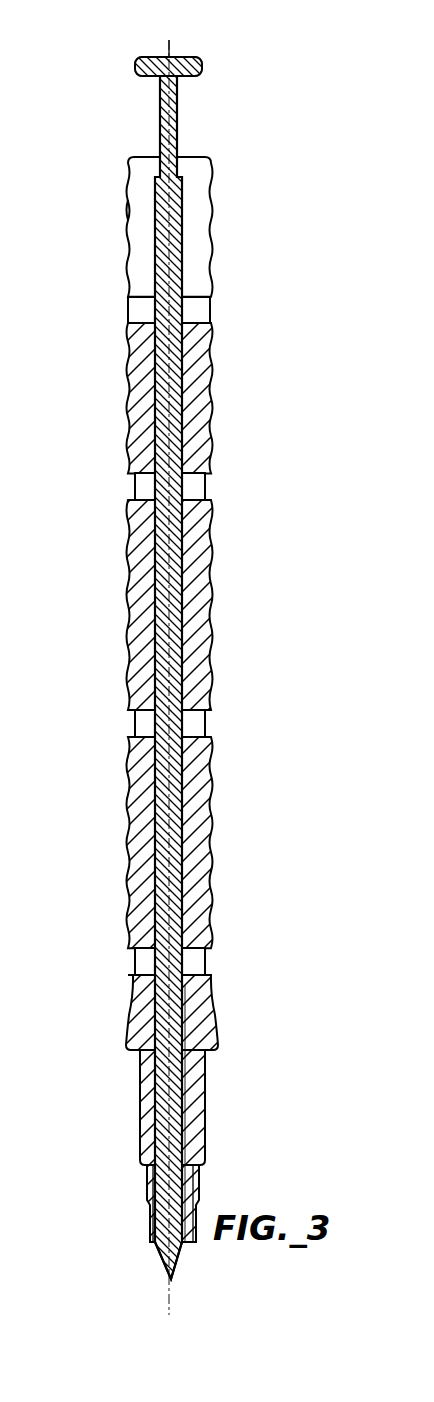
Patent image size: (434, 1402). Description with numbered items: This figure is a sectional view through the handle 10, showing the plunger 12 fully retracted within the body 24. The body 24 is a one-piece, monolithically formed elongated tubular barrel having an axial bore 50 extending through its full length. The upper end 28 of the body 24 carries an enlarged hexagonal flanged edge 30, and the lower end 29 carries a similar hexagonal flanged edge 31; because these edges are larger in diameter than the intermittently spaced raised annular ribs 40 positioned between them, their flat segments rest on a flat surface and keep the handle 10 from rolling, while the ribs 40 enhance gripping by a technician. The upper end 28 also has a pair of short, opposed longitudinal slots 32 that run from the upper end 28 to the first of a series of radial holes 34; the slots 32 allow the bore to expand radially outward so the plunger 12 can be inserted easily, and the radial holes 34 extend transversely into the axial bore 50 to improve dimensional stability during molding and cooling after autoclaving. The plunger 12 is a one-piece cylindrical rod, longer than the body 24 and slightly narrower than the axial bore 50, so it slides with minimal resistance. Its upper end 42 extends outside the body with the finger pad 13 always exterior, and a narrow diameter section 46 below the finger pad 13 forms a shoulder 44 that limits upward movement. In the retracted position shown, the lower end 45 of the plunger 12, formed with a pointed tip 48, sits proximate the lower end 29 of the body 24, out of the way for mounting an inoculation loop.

The handle 10 is at (232, 52).
The plunger 12 is at (158, 148).
The finger pad 13 is at (152, 58).
The body 24 is at (130, 700).
The upper end 28 is at (125, 200).
The lower end 29 is at (142, 1218).
The hexagonal flanged edge 30 is at (125, 162).
The hexagonal flanged edge 31 is at (130, 1050).
The longitudinal slots 32 is at (187, 207).
The radial holes 34 is at (211, 312).
The annular ribs 40 is at (212, 578).
The upper end 42 is at (150, 107).
The shoulder 44 is at (185, 165).
The lower end 45 is at (187, 1246).
The narrow diameter section 46 is at (178, 110).
The pointed tip 48 is at (173, 1281).
The axial bore 50 is at (186, 969).